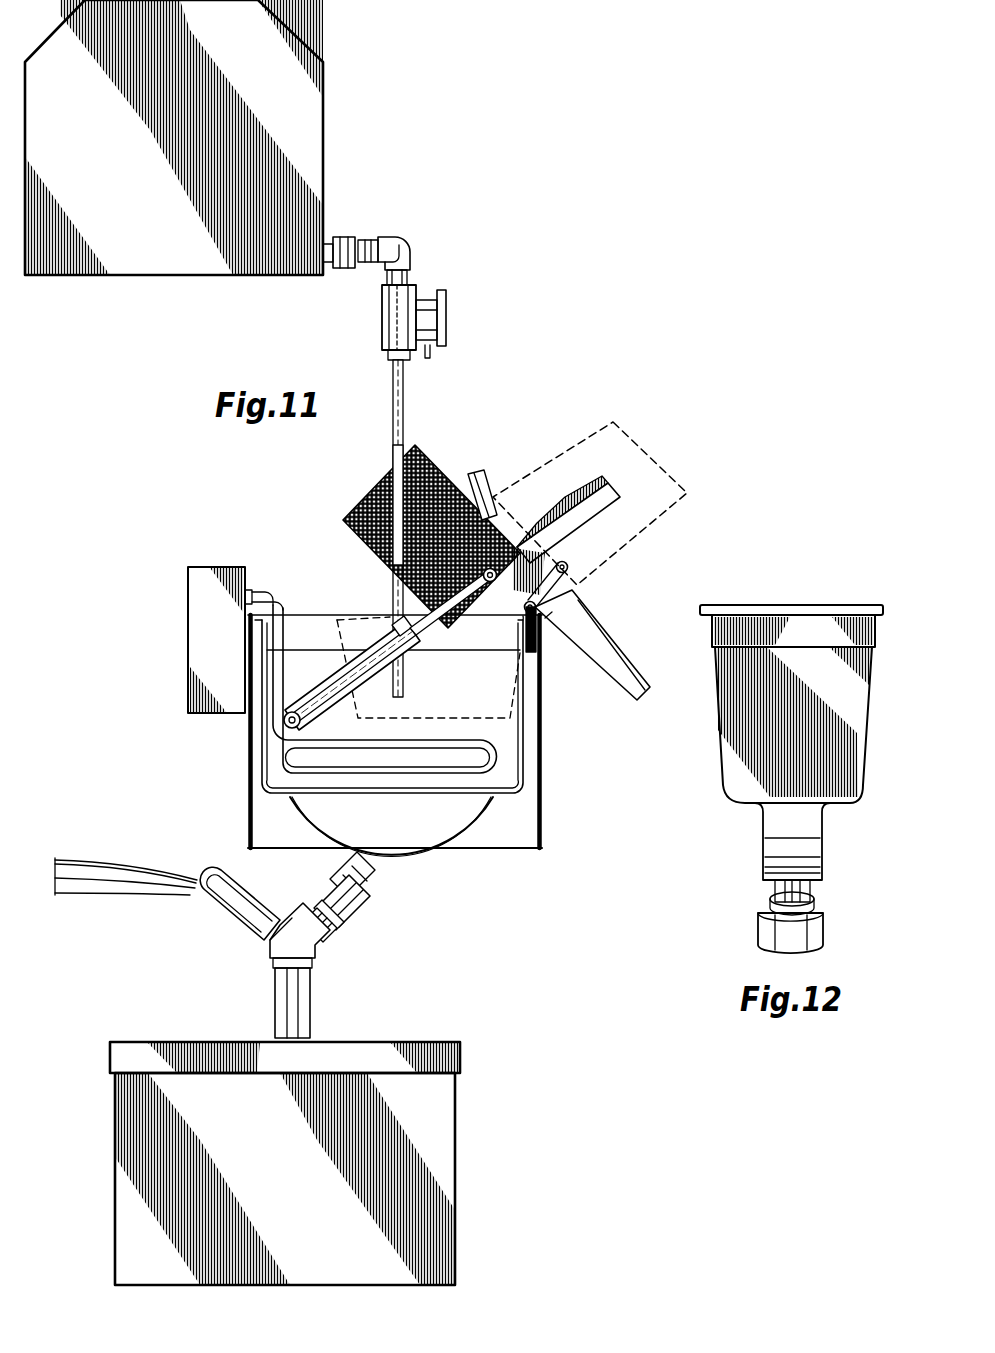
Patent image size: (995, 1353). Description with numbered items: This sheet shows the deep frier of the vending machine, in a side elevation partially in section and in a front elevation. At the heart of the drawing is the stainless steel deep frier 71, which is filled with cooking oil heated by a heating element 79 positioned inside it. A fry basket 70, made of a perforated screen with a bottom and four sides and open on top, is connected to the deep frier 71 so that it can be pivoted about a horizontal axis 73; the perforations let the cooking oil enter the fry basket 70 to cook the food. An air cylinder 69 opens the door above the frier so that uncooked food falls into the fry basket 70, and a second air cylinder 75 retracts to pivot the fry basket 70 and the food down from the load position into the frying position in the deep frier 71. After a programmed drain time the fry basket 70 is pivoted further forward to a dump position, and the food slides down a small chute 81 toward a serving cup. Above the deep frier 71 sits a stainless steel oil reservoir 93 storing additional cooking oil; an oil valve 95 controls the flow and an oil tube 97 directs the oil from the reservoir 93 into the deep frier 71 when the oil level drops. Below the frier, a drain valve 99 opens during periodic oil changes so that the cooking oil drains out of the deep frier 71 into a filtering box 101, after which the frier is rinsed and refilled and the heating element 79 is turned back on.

In FIG. 11, the air cylinder 69 is at (615, 421).
In FIG. 11, the fry basket 70 is at (365, 498).
In FIG. 11, the deep frier 71 is at (523, 773).
In FIG. 12, the deep frier 71 is at (730, 758).
In FIG. 11, the horizontal axis 73 is at (538, 610).
In FIG. 11, the air cylinder 75 is at (317, 683).
In FIG. 11, the heating element 79 is at (495, 803).
In FIG. 11, the chute 81 is at (481, 472).
In FIG. 11, the oil reservoir 93 is at (313, 125).
In FIG. 11, the oil valve 95 is at (433, 325).
In FIG. 11, the oil tube 97 is at (405, 405).
In FIG. 11, the drain valve 99 is at (308, 940).
In FIG. 11, the filtering box 101 is at (433, 1145).